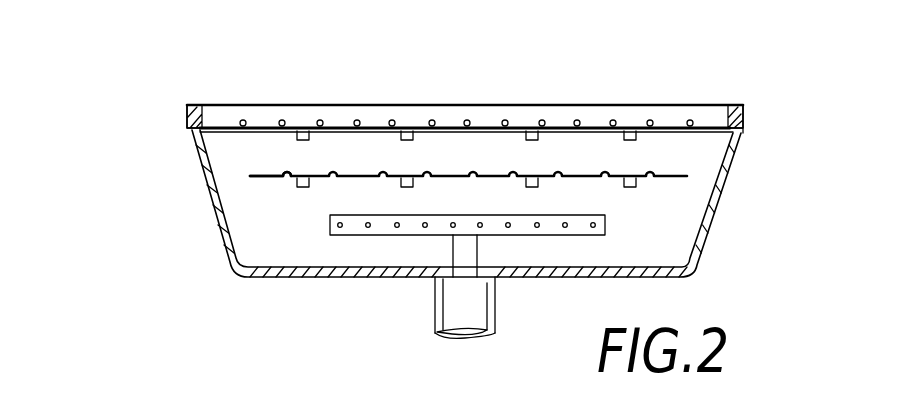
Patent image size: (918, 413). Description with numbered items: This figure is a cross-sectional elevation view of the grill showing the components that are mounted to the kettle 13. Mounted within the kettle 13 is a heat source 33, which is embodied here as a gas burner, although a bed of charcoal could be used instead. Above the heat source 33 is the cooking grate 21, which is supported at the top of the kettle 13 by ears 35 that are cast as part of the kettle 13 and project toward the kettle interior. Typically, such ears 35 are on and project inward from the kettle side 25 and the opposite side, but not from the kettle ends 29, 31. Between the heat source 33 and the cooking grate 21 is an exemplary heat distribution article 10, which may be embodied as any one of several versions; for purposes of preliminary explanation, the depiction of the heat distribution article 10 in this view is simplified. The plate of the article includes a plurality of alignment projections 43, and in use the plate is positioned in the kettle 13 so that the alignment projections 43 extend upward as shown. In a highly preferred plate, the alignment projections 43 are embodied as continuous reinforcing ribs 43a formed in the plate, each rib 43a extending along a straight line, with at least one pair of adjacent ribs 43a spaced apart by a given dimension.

The heat distribution article 10 is at (687, 178).
The kettle 13 is at (737, 160).
The cooking grate 21 is at (587, 130).
The kettle side 25 is at (350, 105).
The kettle end 29 is at (187, 123).
The kettle end 31 is at (742, 117).
The heat source 33 is at (606, 229).
The ears 35 is at (305, 131).
The alignment projections 43 is at (481, 168).
The reinforcing ribs 43a is at (287, 176).